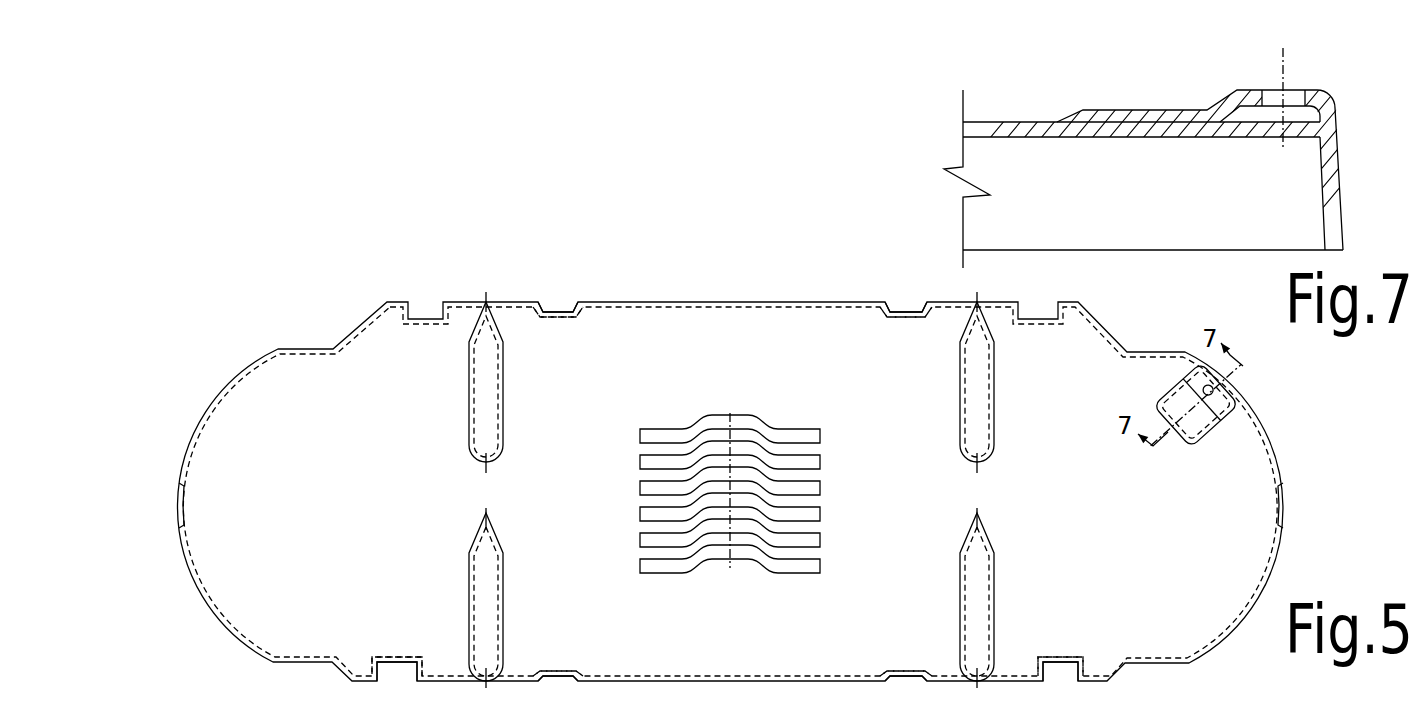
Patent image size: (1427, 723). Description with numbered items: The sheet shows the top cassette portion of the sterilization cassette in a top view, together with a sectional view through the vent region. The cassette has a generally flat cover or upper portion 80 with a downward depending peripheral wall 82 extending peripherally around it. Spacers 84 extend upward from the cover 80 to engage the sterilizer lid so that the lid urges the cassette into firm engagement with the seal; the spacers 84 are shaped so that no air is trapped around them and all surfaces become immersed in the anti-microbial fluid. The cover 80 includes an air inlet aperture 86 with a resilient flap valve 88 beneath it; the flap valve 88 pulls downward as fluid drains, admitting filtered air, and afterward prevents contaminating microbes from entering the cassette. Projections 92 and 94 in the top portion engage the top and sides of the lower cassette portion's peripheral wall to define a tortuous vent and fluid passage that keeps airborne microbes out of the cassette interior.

In FIG. 5, the cover 80 is at (882, 386).
In FIG. 7, the peripheral wall 82 is at (1335, 208).
In FIG. 5, the spacers 84 is at (990, 558).
In FIG. 7, the air inlet aperture 86 is at (1300, 78).
In FIG. 5, the air inlet aperture 86 is at (1222, 386).
In FIG. 7, the resilient flap valve 88 is at (1180, 137).
In FIG. 5, the projections 92 is at (398, 670).
In FIG. 5, the projections 94 is at (562, 310).